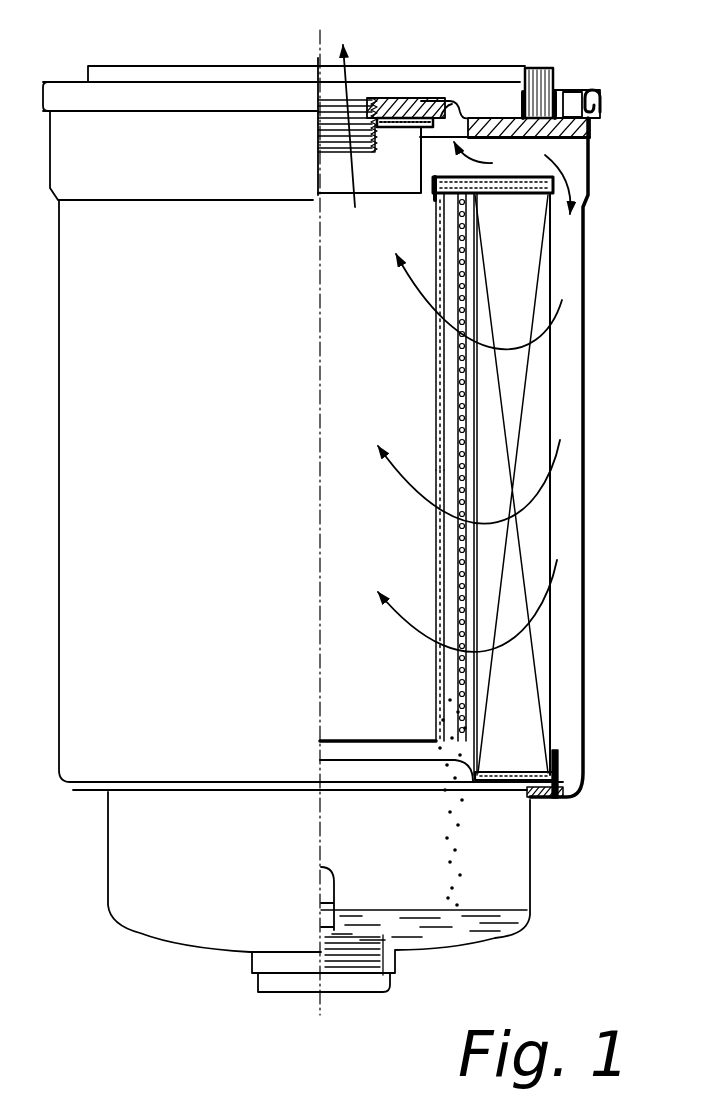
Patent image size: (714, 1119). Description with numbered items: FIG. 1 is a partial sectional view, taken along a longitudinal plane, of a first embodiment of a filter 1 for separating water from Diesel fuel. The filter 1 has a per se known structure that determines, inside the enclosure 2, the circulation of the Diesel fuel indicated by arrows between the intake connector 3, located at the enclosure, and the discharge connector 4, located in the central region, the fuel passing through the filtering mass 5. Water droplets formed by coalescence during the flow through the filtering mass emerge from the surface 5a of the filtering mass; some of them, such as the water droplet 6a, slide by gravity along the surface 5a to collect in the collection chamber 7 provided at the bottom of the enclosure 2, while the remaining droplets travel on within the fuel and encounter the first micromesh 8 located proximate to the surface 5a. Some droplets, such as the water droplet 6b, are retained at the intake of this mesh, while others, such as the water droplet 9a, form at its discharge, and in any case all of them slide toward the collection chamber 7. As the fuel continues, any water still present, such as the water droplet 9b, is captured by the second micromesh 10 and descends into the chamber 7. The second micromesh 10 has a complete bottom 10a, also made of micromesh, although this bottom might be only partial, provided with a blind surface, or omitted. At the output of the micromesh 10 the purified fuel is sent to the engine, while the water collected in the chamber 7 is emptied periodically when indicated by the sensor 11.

The filter 1 is at (58, 467).
The enclosure 2 is at (586, 244).
The intake connector 3 is at (458, 110).
The discharge connector 4 is at (352, 105).
The filtering mass 5 is at (540, 303).
The surface of the filtering mass 5a is at (478, 387).
The water droplet 6a is at (473, 490).
The water droplet 6b is at (473, 593).
The collection chamber 7 is at (400, 864).
The first micromesh 8 is at (465, 383).
The water droplet 9a is at (460, 683).
The water droplet 9b is at (442, 553).
The second micromesh 10 is at (437, 345).
The bottom of the second micromesh 10a is at (397, 743).
The sensor 11 is at (322, 868).